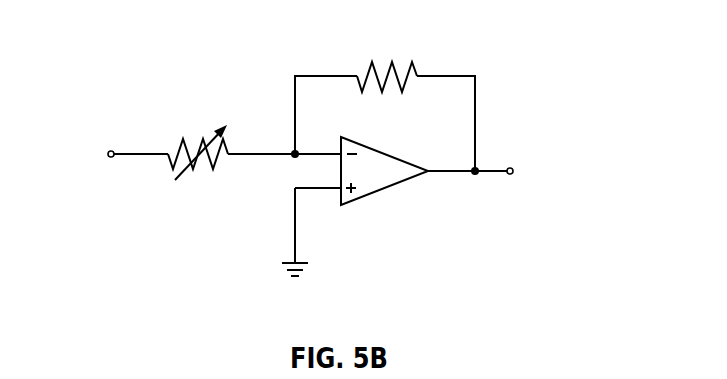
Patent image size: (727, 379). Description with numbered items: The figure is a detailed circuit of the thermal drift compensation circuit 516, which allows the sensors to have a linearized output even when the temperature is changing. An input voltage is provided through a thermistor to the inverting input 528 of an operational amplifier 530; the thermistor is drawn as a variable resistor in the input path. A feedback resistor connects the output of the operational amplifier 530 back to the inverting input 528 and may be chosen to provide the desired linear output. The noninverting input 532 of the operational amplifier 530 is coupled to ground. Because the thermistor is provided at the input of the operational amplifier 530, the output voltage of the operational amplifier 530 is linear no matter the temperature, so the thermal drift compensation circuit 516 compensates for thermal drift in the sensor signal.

The thermal drift compensation circuit 516 is at (318, 155).
The inverting input 528 is at (313, 152).
The operational amplifier 530 is at (385, 190).
The noninverting input 532 is at (317, 190).